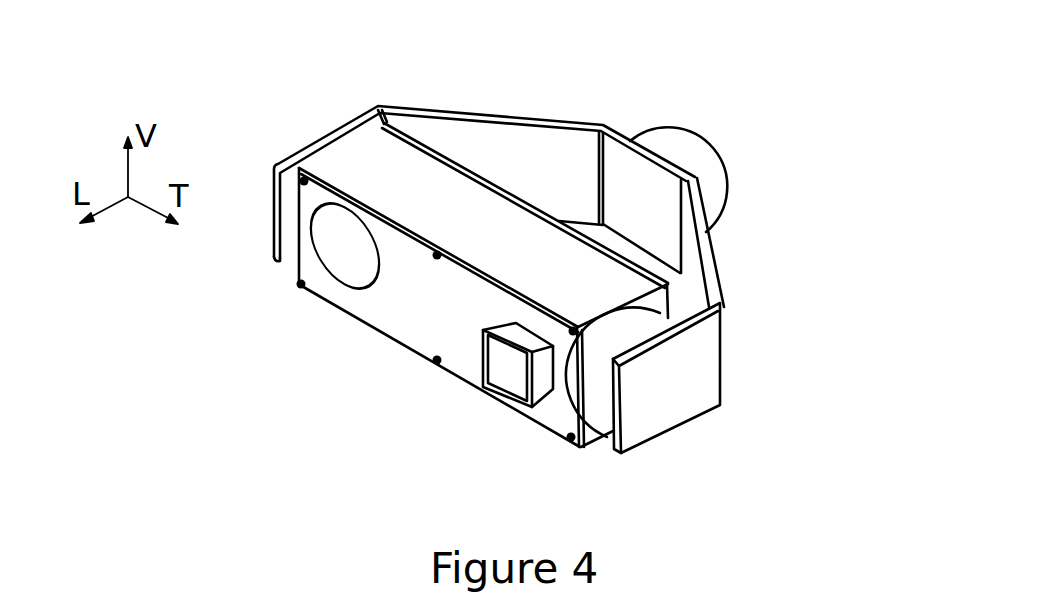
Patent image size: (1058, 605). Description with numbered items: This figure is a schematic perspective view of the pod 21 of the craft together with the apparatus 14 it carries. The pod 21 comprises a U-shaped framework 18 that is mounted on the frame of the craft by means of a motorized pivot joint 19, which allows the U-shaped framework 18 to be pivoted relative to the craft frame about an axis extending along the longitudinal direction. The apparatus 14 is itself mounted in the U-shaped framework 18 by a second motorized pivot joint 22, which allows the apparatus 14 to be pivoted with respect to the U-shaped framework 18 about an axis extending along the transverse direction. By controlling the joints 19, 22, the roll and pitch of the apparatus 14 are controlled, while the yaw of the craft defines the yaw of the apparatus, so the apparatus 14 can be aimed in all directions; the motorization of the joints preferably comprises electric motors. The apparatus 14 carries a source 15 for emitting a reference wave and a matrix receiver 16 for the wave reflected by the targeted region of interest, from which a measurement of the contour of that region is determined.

The apparatus 14 is at (390, 164).
The source 15 is at (500, 378).
The matrix receiver 16 is at (338, 257).
The U-shaped framework 18 is at (724, 305).
The motorized pivot joint 19 is at (708, 190).
The pod 21 is at (698, 109).
The motorized pivot joint 22 is at (600, 403).